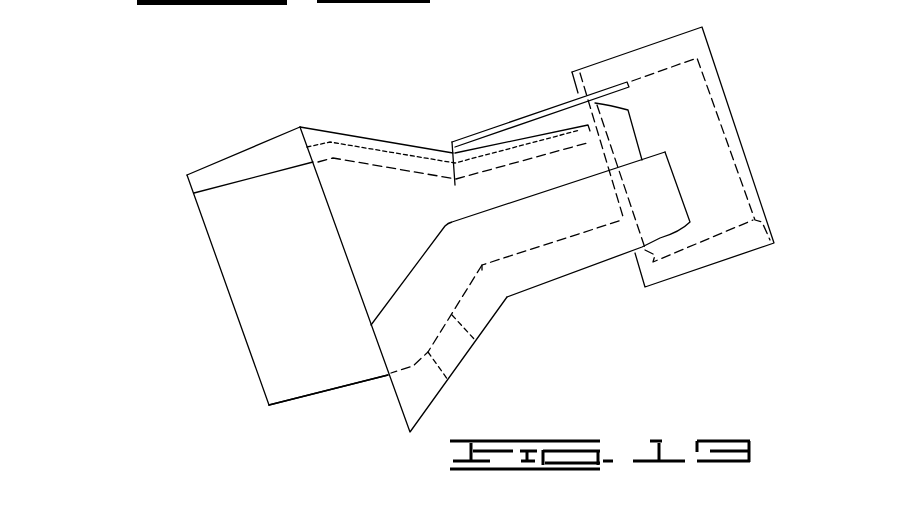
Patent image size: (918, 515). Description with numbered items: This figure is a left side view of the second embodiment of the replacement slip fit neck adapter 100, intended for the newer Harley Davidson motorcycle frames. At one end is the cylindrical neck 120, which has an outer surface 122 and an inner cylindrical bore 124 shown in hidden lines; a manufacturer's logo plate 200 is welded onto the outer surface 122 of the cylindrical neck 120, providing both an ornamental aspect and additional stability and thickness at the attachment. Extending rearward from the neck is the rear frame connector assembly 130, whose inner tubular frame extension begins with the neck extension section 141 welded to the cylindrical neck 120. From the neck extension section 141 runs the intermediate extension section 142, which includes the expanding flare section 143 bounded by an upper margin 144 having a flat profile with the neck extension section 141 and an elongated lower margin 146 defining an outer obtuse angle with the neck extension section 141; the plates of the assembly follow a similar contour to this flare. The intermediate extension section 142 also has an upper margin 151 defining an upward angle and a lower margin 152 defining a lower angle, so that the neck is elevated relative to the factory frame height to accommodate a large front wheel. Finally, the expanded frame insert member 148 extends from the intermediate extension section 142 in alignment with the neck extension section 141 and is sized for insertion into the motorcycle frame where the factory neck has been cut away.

The replacement slip fit neck adapter 100 is at (442, 248).
The cylindrical neck 120 is at (656, 48).
The outer surface 122 is at (575, 86).
The inner cylindrical bore 124 is at (692, 83).
The rear frame connector assembly 130 is at (330, 128).
The neck extension section 141 is at (583, 220).
The intermediate extension section 142 is at (448, 380).
The expanding flare section 143 is at (397, 167).
The upper margin 144 is at (357, 143).
The elongated lower margin 146 is at (477, 342).
The expanded frame insert member 148 is at (325, 376).
The upper margin 151 is at (207, 170).
The lower margin 152 is at (342, 382).
The logo plate 200 is at (500, 123).